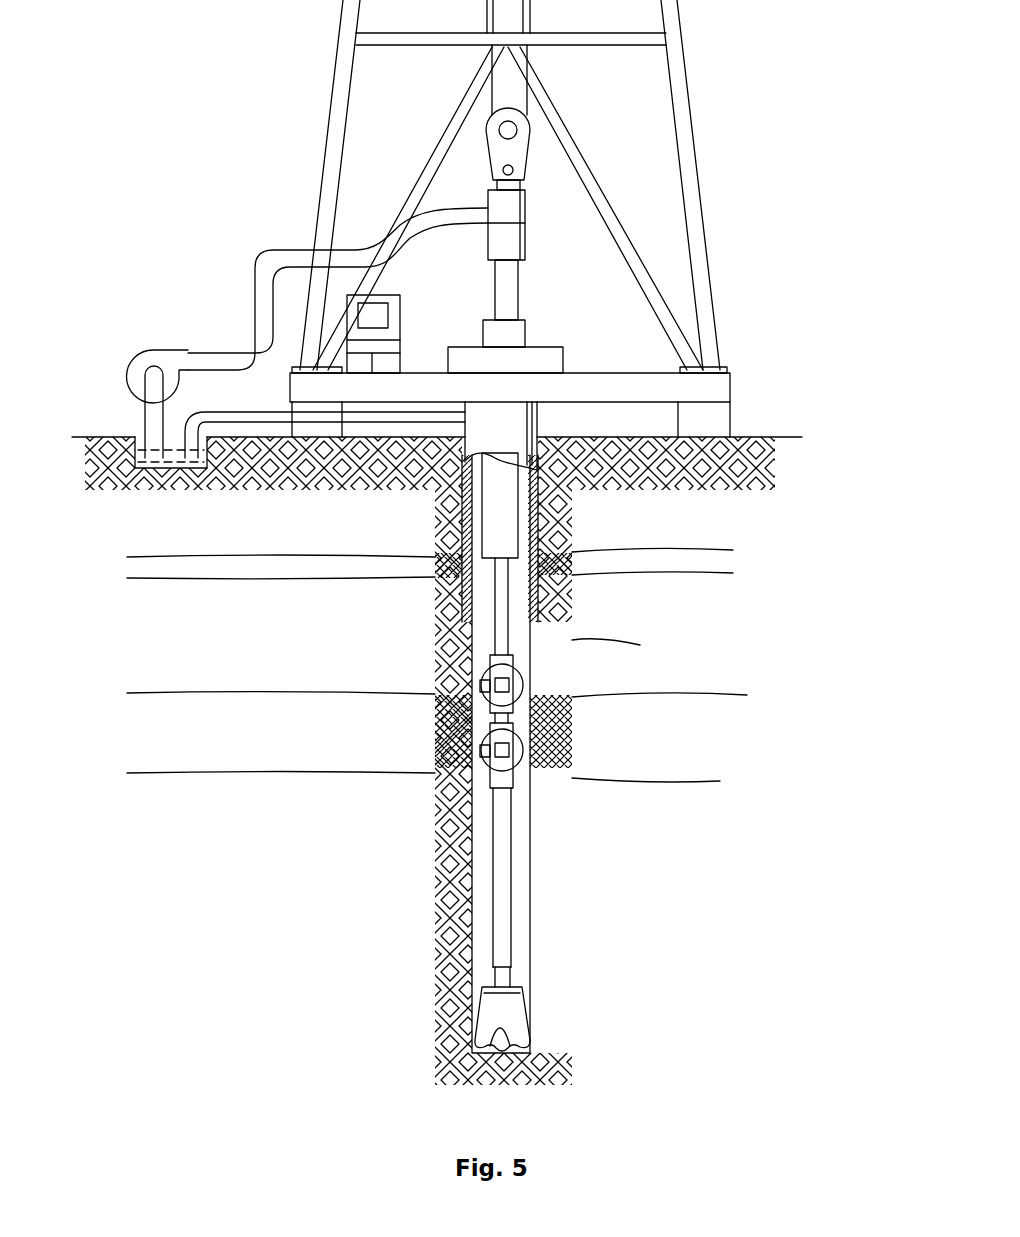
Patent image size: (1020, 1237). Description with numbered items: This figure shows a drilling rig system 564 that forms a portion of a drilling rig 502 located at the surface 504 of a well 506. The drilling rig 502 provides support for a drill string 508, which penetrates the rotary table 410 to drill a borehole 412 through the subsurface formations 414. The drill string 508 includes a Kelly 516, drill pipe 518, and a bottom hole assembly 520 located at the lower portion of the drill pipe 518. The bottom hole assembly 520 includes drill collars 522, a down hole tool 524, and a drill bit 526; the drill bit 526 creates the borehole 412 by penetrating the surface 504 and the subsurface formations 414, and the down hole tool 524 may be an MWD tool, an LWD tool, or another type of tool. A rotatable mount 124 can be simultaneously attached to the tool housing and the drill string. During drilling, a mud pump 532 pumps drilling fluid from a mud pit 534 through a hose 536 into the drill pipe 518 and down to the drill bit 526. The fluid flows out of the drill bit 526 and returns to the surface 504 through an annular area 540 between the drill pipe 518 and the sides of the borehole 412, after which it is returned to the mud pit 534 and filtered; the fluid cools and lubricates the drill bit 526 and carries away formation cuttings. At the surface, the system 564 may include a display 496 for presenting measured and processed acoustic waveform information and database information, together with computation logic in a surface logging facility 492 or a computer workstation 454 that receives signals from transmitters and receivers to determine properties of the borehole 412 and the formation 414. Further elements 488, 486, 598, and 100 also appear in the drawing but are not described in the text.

The drilling rig system 564 is at (463, 276).
The traveling block and swivel 488 is at (684, 65).
The drilling rig 502 is at (716, 183).
The hose 536 is at (268, 250).
The mud pump 532 is at (162, 350).
The surface logging facility 492 is at (399, 284).
The computer workstation 454 is at (403, 320).
The display 496 is at (388, 318).
The rotary table 410 is at (468, 347).
The Kelly 516 is at (518, 283).
The rotary table 598 is at (526, 333).
The rig platform 486 is at (732, 380).
The surface 504 is at (748, 437).
The well 506 is at (559, 430).
The mud pit 534 is at (158, 470).
The drill collars 522 is at (519, 517).
The drill pipe 518 is at (500, 597).
The subsurface formations 414 is at (98, 555).
The rotatable mount 124 is at (478, 653).
The annular area 540 is at (535, 655).
The downhole tool 100 is at (523, 700).
The bottom hole assembly 520 is at (425, 615).
The drill string 508 is at (528, 834).
The borehole 412 is at (530, 912).
The down hole tool 524 is at (500, 946).
The drill bit 526 is at (510, 1006).